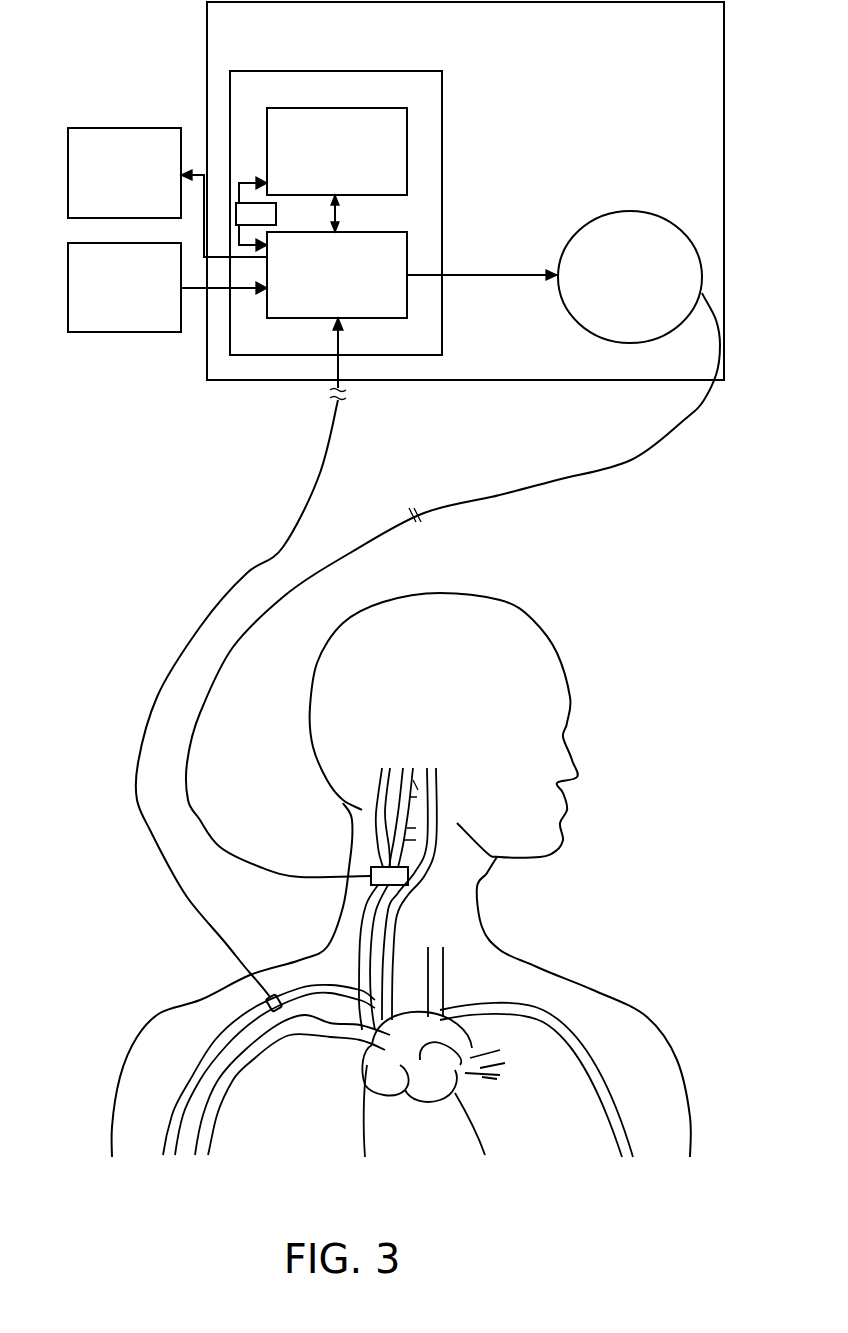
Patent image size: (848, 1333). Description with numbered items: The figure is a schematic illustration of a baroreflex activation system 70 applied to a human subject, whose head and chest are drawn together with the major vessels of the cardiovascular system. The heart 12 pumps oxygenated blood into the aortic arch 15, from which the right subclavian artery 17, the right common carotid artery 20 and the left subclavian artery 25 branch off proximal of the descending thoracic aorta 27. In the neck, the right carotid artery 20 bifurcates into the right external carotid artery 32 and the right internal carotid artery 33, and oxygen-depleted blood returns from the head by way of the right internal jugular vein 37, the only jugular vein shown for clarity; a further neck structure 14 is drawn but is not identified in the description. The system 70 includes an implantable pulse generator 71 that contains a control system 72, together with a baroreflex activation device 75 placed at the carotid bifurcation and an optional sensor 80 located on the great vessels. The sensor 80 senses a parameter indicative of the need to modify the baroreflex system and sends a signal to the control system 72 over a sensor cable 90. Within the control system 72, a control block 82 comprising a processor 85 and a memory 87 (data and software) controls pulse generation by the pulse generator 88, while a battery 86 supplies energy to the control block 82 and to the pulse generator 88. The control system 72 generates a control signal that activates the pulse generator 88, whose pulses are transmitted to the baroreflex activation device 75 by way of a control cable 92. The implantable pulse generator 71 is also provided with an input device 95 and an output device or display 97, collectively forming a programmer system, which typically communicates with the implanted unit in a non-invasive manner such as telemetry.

The heart 12 is at (460, 1130).
The left vagus nerve 14 is at (392, 920).
The aortic arch 15 is at (437, 977).
The right subclavian artery 17 is at (188, 1082).
The right common carotid artery 20 is at (345, 856).
The left subclavian artery 25 is at (530, 1015).
The descending thoracic aorta 27 is at (493, 1025).
The right external carotid artery 32 is at (380, 780).
The right internal carotid artery 33 is at (410, 773).
The right internal jugular vein 37 is at (437, 797).
The baroreflex activation system 70 is at (131, 455).
The implantable pulse generator 71 is at (734, 152).
The control system 72 is at (476, 88).
The baroreflex activation device 75 is at (371, 883).
The sensor 80 is at (273, 993).
The control block 82 is at (407, 128).
The processor 85 is at (407, 298).
The battery 86 is at (233, 180).
The memory 87 is at (407, 175).
The pulse generator 88 is at (577, 328).
The sensor cable 90 is at (247, 570).
The control cable 92 is at (612, 462).
The input device 95 is at (128, 322).
The display 97 is at (125, 140).